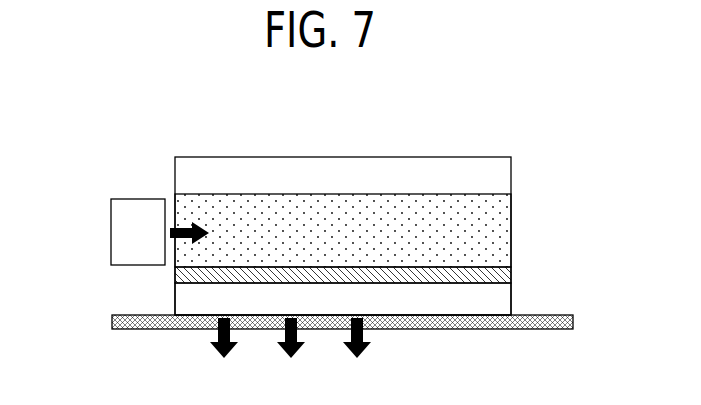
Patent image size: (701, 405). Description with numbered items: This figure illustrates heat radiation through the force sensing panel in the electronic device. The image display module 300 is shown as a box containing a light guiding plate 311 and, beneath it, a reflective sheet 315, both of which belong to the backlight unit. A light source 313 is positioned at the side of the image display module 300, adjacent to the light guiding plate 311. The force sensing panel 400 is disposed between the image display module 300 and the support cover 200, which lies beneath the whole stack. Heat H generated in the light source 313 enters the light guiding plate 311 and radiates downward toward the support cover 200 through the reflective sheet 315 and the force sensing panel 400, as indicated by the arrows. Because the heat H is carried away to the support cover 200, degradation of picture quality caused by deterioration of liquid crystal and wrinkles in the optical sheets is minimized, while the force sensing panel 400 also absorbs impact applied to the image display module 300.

The image display module 300 is at (500, 181).
The light guiding plate 311 is at (495, 237).
The light source 313 is at (111, 199).
The reflective sheet 315 is at (505, 275).
The force sensing panel 400 is at (503, 298).
The support cover 200 is at (112, 322).
The heat H is at (183, 226).